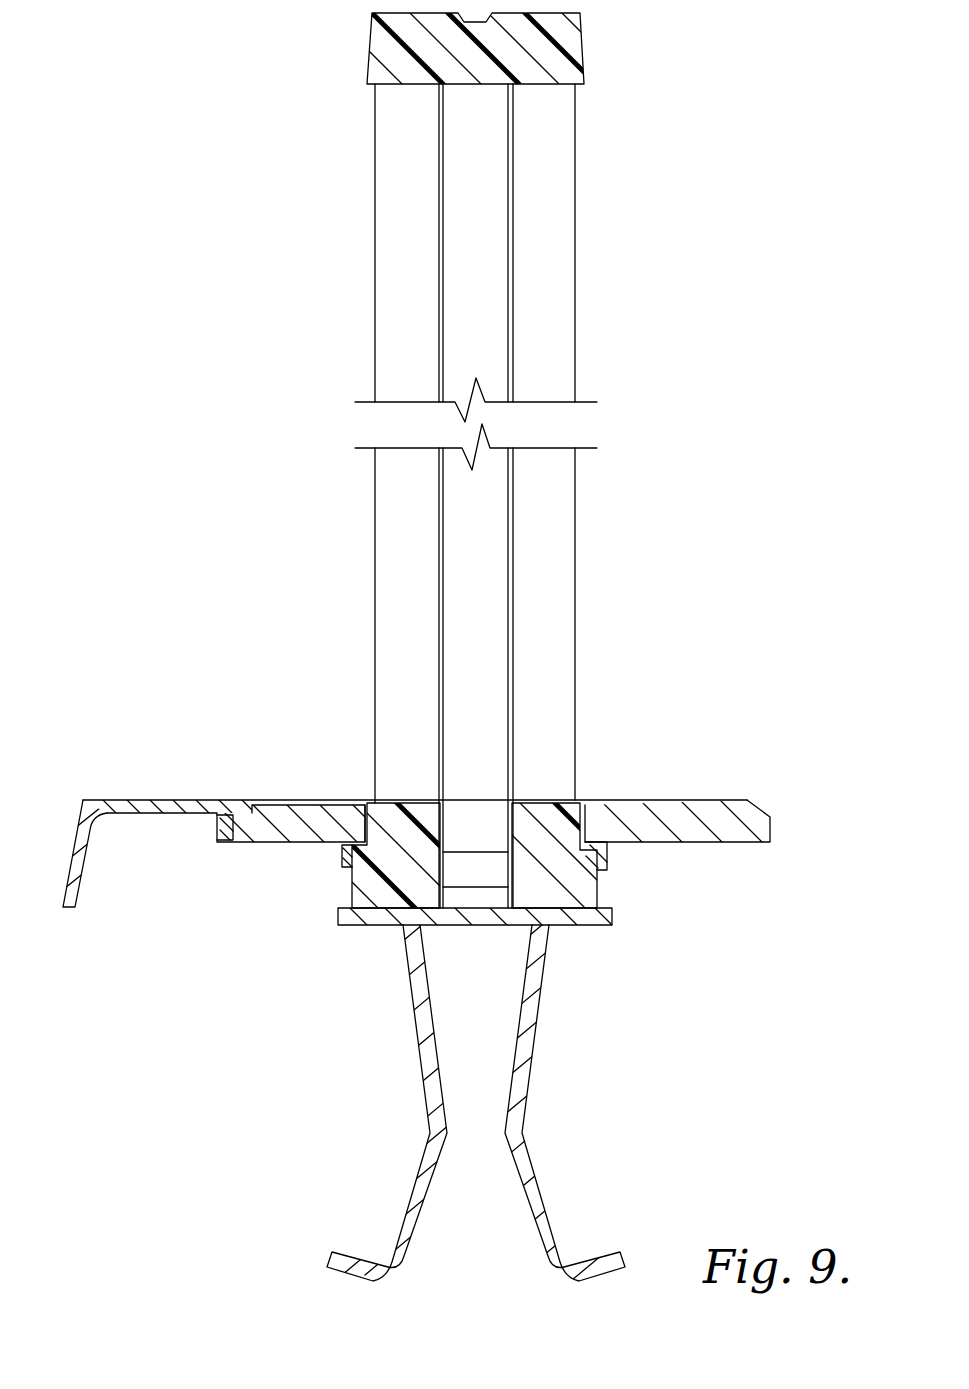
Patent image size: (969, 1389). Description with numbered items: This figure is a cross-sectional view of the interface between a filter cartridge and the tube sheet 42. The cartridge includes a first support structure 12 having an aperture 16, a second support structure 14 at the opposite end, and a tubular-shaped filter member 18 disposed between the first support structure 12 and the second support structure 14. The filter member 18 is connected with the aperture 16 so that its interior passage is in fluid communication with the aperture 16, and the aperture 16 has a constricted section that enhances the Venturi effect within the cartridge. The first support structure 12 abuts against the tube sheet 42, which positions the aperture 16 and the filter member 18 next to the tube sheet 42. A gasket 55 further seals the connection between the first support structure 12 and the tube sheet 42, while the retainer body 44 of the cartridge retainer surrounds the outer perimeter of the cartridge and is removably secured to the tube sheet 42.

The first support structure 12 is at (600, 888).
The second support structure 14 is at (580, 37).
The aperture 16 is at (478, 910).
The tubular-shaped filter member 18 is at (512, 560).
The tube sheet 42 is at (763, 815).
The retainer body 44 is at (63, 897).
The gasket 55 is at (343, 862).